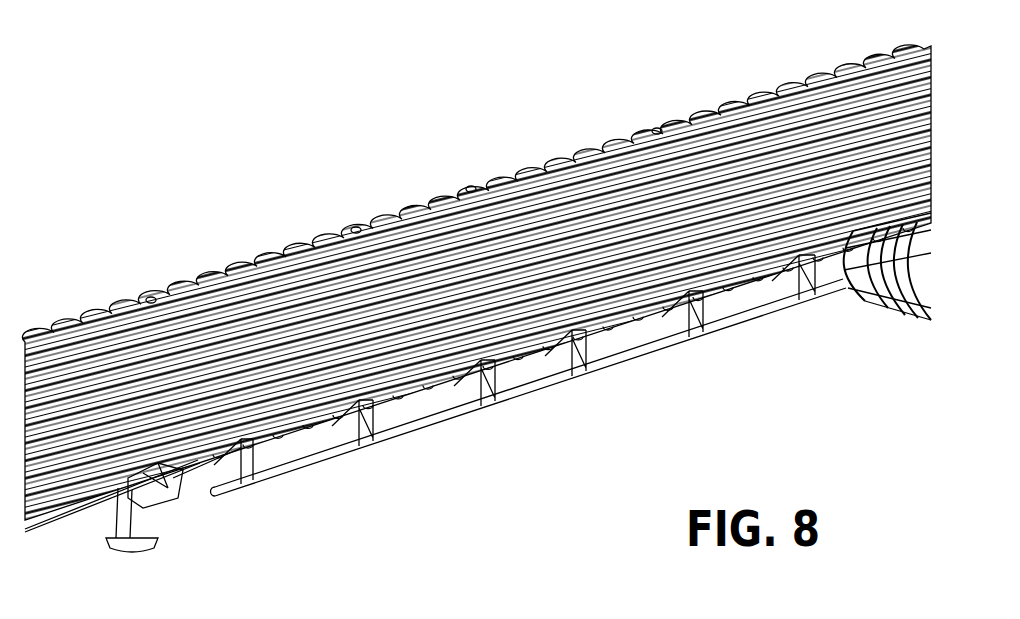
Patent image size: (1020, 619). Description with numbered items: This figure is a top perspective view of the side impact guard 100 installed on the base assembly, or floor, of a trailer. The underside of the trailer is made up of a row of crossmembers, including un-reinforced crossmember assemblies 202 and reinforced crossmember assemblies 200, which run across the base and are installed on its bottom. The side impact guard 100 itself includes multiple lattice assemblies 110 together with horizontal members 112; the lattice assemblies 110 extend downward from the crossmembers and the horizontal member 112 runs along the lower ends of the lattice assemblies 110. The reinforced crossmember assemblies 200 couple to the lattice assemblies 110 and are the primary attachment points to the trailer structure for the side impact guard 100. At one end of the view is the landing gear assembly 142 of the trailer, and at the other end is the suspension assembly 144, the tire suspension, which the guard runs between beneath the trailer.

The side impact guard 100 is at (478, 295).
The lattice assembly 110 is at (350, 425).
The horizontal member 112 is at (440, 418).
The landing gear assembly 142 is at (92, 538).
The suspension assembly 144 is at (904, 320).
The reinforced crossmember assembly 200 is at (80, 312).
The un-reinforced crossmember assembly 202 is at (141, 290).